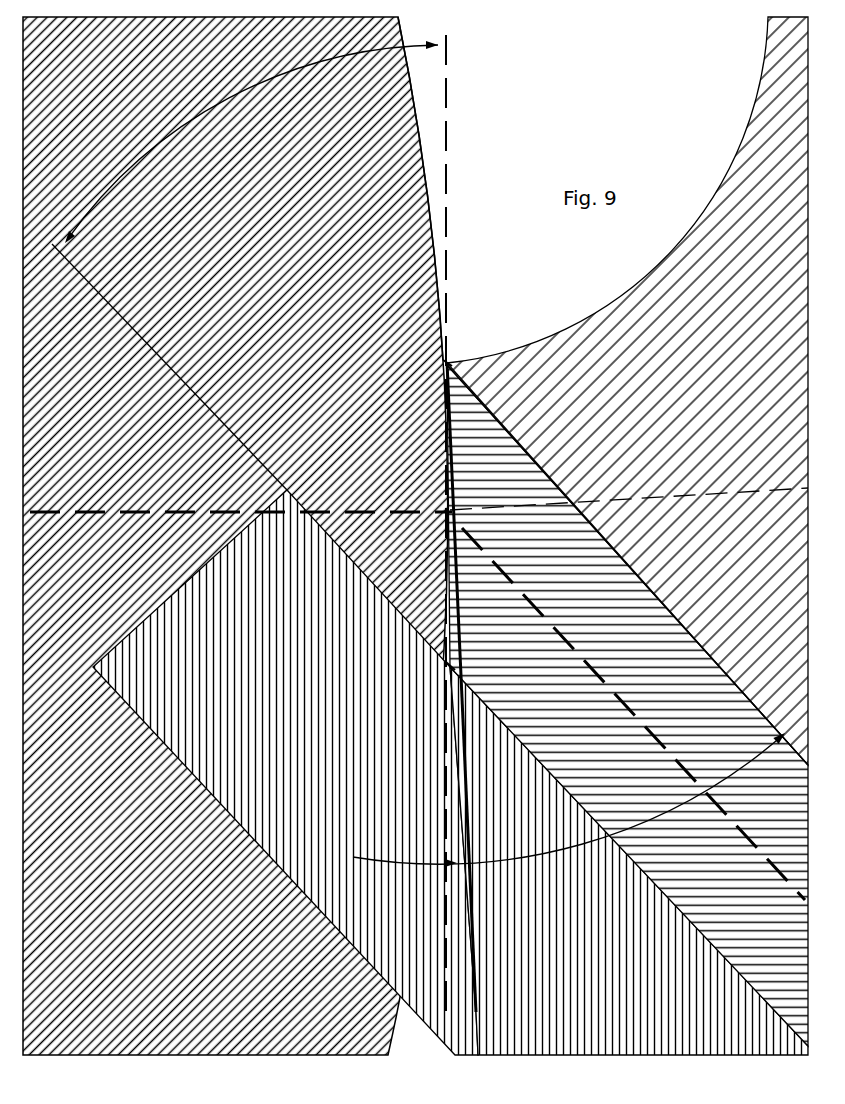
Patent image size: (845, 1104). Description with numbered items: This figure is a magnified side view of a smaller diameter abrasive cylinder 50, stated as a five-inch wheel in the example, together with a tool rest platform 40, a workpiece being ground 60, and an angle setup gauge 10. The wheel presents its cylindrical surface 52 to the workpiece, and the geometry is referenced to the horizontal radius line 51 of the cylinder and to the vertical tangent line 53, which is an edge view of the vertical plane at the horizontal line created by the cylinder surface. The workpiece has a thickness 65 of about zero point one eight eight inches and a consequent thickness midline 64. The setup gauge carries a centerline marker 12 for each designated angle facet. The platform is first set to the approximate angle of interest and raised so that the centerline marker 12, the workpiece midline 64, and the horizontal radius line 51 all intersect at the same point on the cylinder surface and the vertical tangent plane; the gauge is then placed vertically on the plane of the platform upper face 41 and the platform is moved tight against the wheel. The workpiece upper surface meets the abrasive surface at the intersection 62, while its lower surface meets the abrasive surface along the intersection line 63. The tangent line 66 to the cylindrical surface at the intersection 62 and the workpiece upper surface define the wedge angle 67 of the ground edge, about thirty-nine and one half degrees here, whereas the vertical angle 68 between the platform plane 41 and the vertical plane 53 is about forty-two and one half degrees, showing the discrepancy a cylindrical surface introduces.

The angle setup gauge 10 is at (773, 137).
The centerline marker of lower abrasive contact face 12 is at (655, 496).
The tool rest platform 40 is at (200, 704).
The plane of the tool rest platform upper face 41 is at (666, 900).
The smaller diameter abrasive cylinder 50 is at (376, 186).
The horizontal radius line of a smaller diameter abrasive cylinder 51 is at (88, 522).
The cylindrical surface of a smaller diameter abrasive cylinder 52 is at (430, 231).
The vertical tangent line of a smaller diameter abrasive cylinder 53 is at (447, 181).
The workpiece being ground 60 is at (740, 958).
The intersection of the upper surface of a workpiece and an abrasive surface 62 is at (447, 352).
The intersection line of the lower surface of a workpiece and an abrasive surface 63 is at (450, 664).
The midline of the thickness of a workpiece 64 is at (463, 530).
The workpiece thickness 65 is at (547, 475).
The tangent line to the abrasive cylindrical surface 66 is at (474, 948).
The wedge angle of a ground edge 67 is at (789, 695).
The vertical angle between the vertical tangent at the workpiece midline and a workp 68 is at (438, 45).